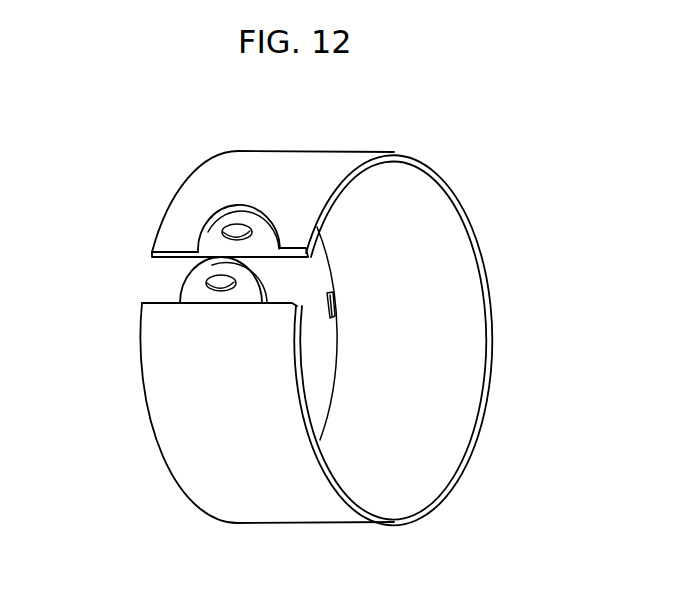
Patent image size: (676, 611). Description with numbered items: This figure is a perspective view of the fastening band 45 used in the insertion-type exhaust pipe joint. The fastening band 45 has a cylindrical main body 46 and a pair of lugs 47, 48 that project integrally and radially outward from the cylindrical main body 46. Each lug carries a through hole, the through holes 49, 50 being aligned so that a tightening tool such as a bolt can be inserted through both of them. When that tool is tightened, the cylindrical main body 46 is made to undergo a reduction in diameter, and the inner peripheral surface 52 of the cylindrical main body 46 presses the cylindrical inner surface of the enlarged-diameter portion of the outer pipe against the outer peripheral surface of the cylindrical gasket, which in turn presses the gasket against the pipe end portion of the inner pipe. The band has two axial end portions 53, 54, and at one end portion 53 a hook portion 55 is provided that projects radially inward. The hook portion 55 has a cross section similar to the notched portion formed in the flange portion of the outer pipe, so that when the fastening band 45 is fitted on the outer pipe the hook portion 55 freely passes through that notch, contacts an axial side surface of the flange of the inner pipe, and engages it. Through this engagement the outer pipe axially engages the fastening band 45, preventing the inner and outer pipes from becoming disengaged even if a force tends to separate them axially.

The fastening band 45 is at (488, 260).
The cylindrical main body 46 is at (172, 422).
The lug 47 is at (208, 243).
The lug 48 is at (193, 290).
The through hole 49 is at (243, 230).
The through hole 50 is at (218, 287).
The inner peripheral surface 52 is at (467, 352).
The axial end portion 53 is at (188, 470).
The axial end portion 54 is at (337, 510).
The hook portion 55 is at (334, 303).